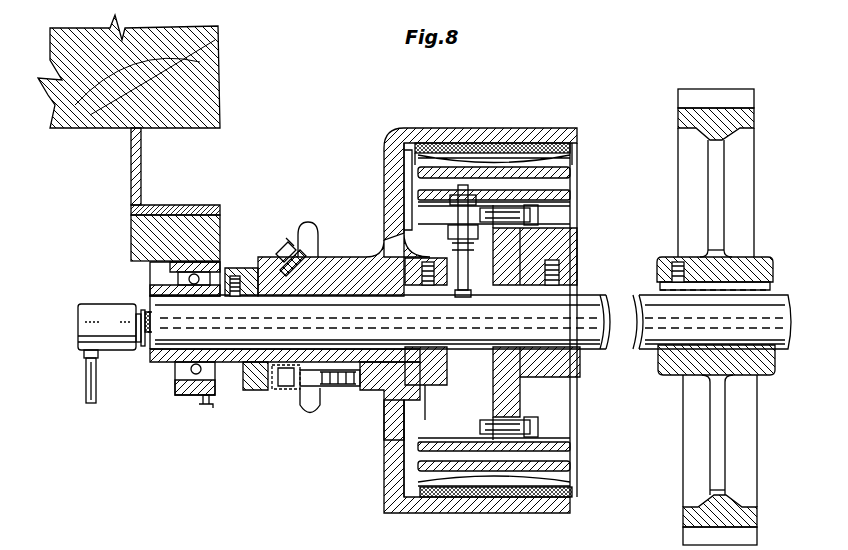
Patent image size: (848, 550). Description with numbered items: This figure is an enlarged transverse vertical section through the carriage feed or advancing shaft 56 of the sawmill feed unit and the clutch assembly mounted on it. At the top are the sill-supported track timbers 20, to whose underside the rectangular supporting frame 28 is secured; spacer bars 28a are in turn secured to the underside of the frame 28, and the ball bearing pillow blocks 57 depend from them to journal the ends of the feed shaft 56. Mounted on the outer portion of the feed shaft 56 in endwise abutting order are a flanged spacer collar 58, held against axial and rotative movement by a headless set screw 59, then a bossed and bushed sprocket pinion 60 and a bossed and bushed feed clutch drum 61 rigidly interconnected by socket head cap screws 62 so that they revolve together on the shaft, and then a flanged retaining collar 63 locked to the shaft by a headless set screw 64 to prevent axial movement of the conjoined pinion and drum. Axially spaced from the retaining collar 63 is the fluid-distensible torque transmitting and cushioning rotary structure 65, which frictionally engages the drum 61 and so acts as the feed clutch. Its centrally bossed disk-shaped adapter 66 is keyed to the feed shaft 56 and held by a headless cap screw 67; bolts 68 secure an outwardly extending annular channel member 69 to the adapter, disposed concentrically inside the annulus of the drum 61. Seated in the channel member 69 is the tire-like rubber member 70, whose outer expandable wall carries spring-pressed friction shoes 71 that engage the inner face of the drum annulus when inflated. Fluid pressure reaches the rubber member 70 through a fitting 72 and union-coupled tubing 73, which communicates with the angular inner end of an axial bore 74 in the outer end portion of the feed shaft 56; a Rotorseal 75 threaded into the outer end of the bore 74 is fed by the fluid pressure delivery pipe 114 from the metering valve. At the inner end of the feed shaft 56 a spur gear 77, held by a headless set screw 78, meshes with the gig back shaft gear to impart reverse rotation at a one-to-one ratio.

The track timbers 20 is at (64, 124).
The supporting frame 28 is at (131, 191).
The spacer bars 28a is at (141, 241).
The carriage feed shaft 56 is at (602, 298).
The ball bearing pillow blocks 57 is at (185, 395).
The flanged spacer collar 58 is at (248, 390).
The headless set screw 59 is at (236, 296).
The sprocket pinion 60 is at (310, 240).
The feed clutch drum 61 is at (393, 490).
The socket head cap screws 62 is at (302, 392).
The flanged retaining collar 63 is at (432, 370).
The headless set screw 64 is at (428, 262).
The fluid-distensible rotary structure 65 is at (580, 425).
The disk-shaped adapter 66 is at (550, 372).
The headless cap screw 67 is at (560, 262).
The bolts 68 is at (520, 215).
The annular channel member 69 is at (572, 192).
The fluid-distensible tire-like rubber member 70 is at (572, 172).
The friction shoes 71 is at (492, 148).
The fitting 72 is at (404, 190).
The union-coupled tubing 73 is at (455, 210).
The axial bore 74 is at (195, 318).
The Rotorseal 75 is at (88, 316).
The spur gear 77 is at (745, 440).
The headless set screw 78 is at (675, 262).
The fluid pressure delivery pipe 114 is at (90, 385).